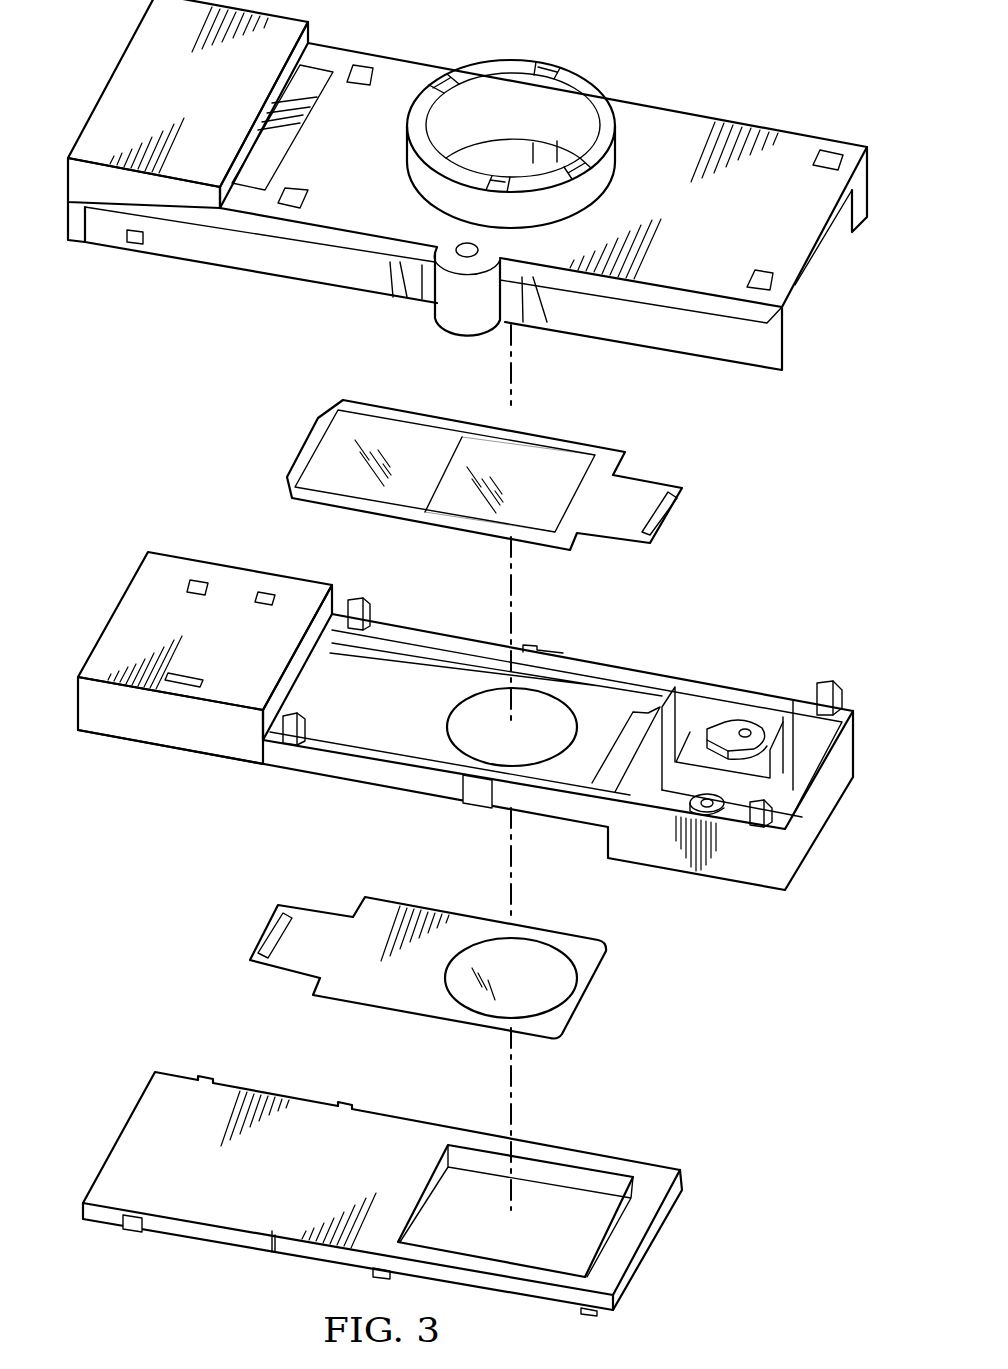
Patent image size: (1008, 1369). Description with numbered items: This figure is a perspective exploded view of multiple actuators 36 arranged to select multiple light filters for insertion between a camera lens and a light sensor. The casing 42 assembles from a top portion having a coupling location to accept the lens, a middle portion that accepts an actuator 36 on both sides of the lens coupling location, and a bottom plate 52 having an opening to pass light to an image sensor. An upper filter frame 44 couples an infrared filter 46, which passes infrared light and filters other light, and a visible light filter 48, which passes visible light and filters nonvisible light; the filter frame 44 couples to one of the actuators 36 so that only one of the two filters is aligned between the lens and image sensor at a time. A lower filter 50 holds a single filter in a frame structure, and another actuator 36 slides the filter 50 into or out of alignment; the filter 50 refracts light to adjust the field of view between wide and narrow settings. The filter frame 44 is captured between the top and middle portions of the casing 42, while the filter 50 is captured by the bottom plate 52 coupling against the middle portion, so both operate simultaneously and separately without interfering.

The actuator 36 is at (113, 613).
The casing 42 is at (673, 107).
The upper filter frame 44 is at (674, 514).
The infrared filter 46 is at (547, 458).
The visible light filter 48 is at (393, 433).
The lower filter 50 is at (555, 988).
The bottom plate 52 is at (198, 1240).